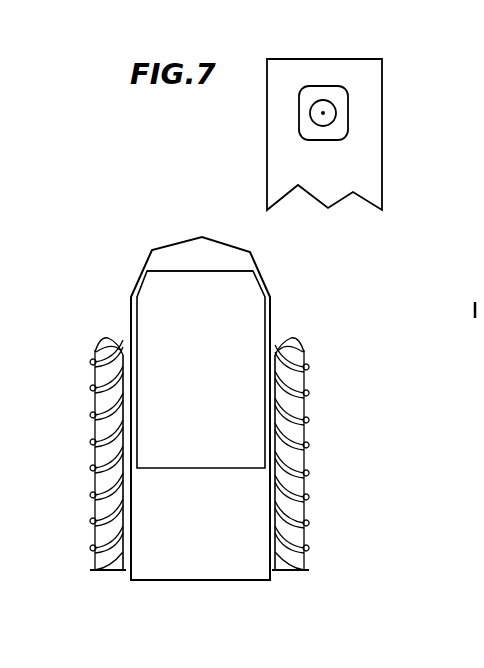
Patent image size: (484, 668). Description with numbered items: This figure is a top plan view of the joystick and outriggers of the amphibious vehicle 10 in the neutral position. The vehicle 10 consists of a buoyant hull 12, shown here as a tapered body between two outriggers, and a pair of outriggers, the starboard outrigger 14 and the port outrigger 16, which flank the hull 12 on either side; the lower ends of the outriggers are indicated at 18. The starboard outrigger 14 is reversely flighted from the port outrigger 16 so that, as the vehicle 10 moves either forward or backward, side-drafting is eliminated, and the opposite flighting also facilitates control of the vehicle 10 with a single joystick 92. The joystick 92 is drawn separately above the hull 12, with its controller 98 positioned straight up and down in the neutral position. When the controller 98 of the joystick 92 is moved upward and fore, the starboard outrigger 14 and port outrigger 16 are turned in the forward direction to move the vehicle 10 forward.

The amphibious vehicle 10 is at (138, 240).
The buoyant hull 12 is at (265, 283).
The starboard outrigger 14 is at (306, 336).
The port outrigger 16 is at (100, 340).
The coil spring end 18 is at (112, 570).
The joystick 92 is at (390, 141).
The controller 98 is at (336, 113).